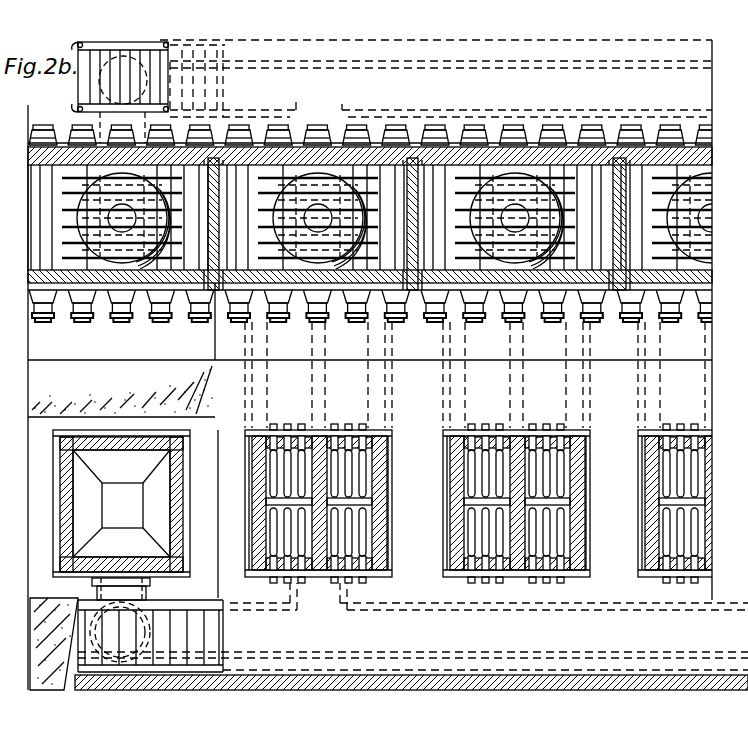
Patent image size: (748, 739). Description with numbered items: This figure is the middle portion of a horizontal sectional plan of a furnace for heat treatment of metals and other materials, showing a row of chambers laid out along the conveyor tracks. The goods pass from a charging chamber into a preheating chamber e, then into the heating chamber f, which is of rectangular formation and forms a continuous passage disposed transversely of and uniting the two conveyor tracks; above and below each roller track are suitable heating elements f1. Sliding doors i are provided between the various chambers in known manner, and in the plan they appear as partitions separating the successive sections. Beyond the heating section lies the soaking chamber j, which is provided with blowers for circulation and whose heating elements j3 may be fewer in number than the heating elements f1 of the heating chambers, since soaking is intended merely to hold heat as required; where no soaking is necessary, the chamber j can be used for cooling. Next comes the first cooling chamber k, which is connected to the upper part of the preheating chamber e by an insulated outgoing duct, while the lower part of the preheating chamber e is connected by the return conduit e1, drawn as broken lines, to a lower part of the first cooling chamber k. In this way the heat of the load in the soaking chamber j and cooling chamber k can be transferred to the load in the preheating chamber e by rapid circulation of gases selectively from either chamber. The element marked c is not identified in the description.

The first cooling chamber k is at (62, 140).
The conduit e1 is at (312, 88).
The soaking chamber j is at (337, 146).
The heating chamber f is at (534, 148).
The chambers c is at (268, 238).
The sliding doors i is at (208, 226).
The preheating chamber e is at (495, 272).
The heating elements j3 is at (292, 472).
The heating elements f1 is at (485, 452).